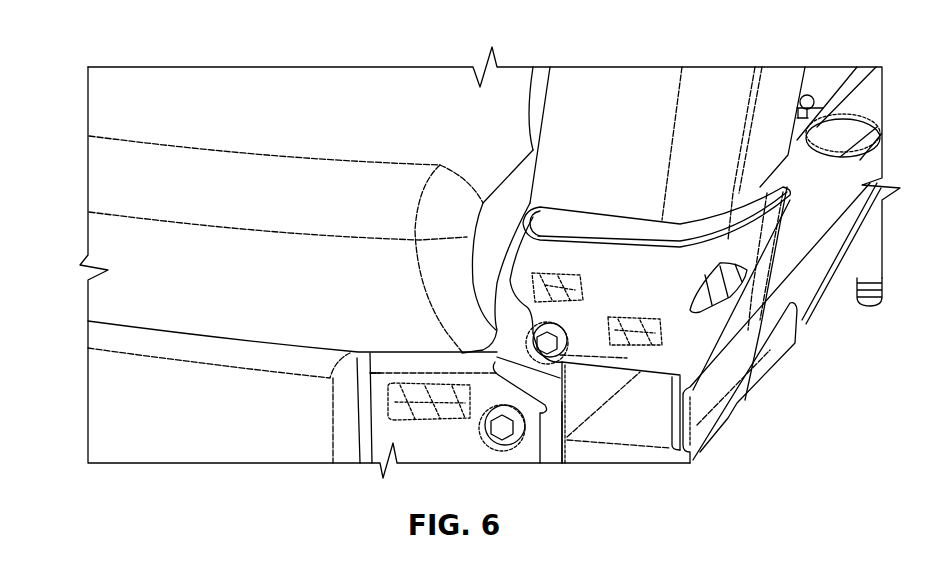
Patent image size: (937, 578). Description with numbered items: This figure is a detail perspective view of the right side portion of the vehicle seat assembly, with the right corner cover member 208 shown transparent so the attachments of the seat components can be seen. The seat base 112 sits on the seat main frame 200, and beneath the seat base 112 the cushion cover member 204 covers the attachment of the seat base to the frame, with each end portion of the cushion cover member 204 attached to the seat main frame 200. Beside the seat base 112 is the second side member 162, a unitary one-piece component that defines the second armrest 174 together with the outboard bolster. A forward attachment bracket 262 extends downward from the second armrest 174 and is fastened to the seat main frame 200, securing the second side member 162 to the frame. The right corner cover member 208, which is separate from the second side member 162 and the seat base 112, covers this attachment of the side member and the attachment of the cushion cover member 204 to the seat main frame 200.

The seat base 112 is at (103, 189).
The second side member 162 is at (595, 92).
The second armrest 174 is at (665, 92).
The forward attachment bracket 262 is at (605, 262).
The right corner cover member 208 is at (792, 235).
The seat main frame 200 is at (803, 297).
The cushion cover member 204 is at (180, 430).